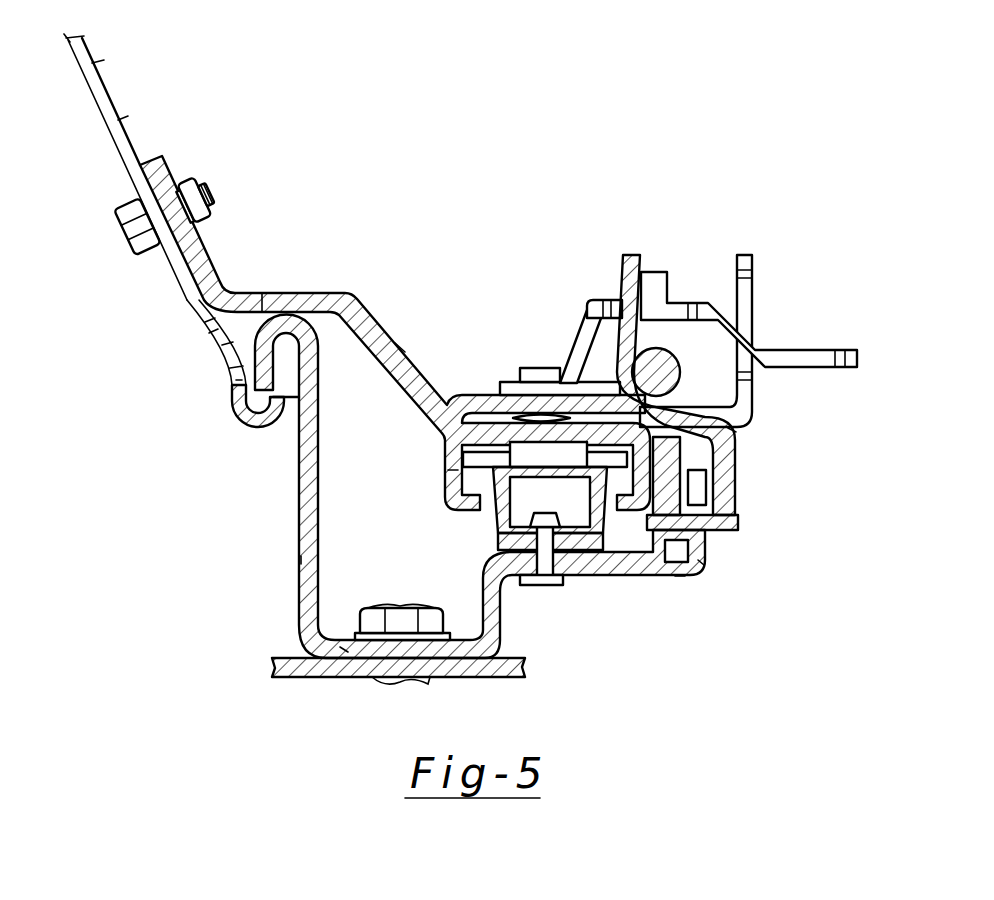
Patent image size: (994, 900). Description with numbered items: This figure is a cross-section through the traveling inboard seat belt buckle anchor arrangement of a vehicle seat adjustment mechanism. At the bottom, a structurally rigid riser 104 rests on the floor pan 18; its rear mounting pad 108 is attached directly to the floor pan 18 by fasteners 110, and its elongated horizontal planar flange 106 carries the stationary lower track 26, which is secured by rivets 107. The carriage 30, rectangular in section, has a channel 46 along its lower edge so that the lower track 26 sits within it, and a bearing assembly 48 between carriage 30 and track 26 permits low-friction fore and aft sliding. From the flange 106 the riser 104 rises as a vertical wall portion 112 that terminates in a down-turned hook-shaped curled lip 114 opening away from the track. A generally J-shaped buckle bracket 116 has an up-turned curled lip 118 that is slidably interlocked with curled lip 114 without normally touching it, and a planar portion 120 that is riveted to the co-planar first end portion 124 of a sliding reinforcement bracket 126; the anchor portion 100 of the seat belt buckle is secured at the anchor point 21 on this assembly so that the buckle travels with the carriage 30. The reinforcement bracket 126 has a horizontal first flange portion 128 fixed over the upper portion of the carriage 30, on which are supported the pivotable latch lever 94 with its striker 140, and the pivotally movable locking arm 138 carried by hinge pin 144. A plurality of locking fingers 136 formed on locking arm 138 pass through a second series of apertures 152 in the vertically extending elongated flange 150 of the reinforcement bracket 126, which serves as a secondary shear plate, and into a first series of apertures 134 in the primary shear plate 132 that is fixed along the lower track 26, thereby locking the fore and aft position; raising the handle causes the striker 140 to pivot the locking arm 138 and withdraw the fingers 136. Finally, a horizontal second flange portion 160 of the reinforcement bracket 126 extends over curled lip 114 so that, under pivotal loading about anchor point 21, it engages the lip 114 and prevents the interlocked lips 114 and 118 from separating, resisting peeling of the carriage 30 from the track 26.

The floor pan 18 is at (490, 677).
The anchor point 21 is at (193, 203).
The lower track 26 is at (486, 534).
The carriage 30 is at (446, 486).
The channel 46 is at (487, 508).
The bearing assembly 48 is at (536, 580).
The latch lever 94 is at (781, 353).
The anchor portion 100 is at (112, 104).
The riser 104 is at (321, 466).
The planar flange 106 is at (613, 578).
The rivets 107 is at (555, 586).
The rear mounting pad 108 is at (343, 653).
The fasteners 110 is at (400, 606).
The vertical wall portion 112 is at (302, 560).
The hook-shaped curled lip 114 is at (263, 376).
The buckle bracket 116 is at (212, 332).
The up-turned curled lip 118 is at (258, 428).
The planar portion 120 is at (185, 283).
The first end portion 124 is at (196, 256).
The reinforcement bracket 126 is at (393, 344).
The first flange portion 128 is at (494, 383).
The primary shear plate 132 is at (716, 566).
The first series of apertures 134 is at (745, 530).
The locking fingers 136 is at (680, 580).
The locking arm 138 is at (740, 432).
The striker 140 is at (656, 292).
The hinge pin 144 is at (664, 362).
The vertically extending elongated flange 150 is at (682, 462).
The second series of apertures 152 is at (718, 498).
The second flange portion 160 is at (332, 250).